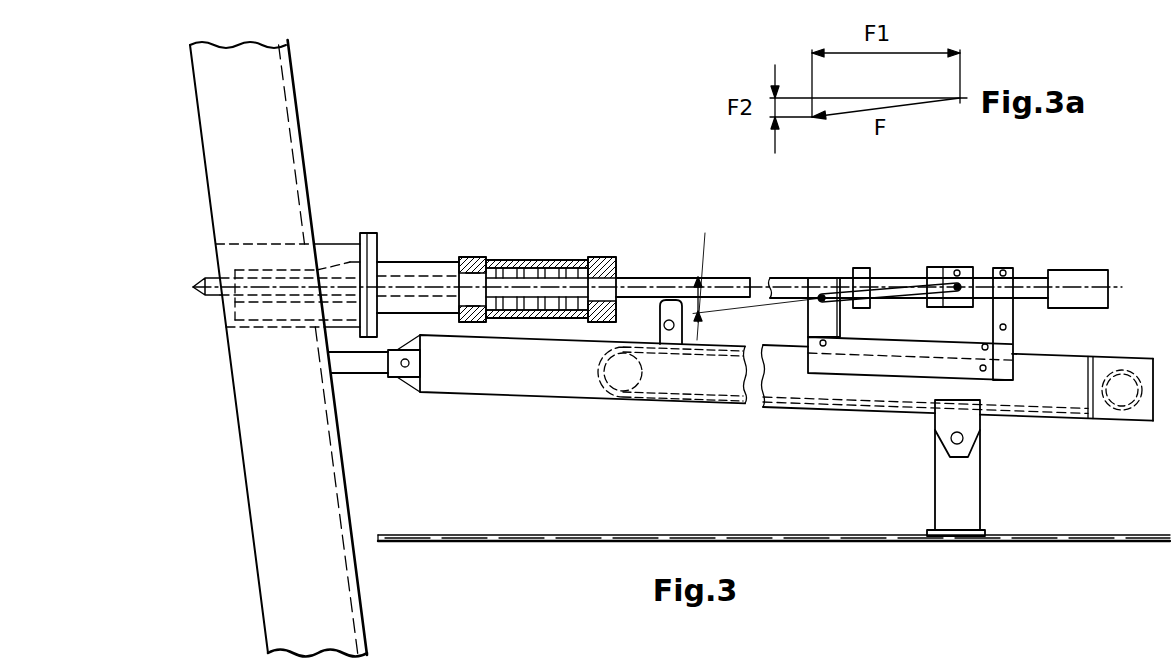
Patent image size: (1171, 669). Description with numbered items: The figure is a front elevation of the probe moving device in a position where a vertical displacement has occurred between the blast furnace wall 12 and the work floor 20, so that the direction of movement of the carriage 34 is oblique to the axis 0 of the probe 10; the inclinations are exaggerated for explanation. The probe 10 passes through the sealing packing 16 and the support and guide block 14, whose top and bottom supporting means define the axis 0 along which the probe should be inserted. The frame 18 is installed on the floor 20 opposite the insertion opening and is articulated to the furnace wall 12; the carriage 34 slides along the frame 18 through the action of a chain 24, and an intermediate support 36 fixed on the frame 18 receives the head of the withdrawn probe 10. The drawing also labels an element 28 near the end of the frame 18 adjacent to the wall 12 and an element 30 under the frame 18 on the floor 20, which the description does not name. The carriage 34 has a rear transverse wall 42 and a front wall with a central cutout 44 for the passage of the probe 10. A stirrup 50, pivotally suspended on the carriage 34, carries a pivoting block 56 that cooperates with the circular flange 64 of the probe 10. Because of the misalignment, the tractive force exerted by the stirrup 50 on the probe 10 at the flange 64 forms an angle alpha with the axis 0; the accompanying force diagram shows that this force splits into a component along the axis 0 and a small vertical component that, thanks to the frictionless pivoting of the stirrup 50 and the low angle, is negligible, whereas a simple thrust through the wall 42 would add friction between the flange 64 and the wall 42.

The axis 0 is at (398, 286).
The probe 10 is at (723, 277).
The blast furnace wall 12 is at (307, 190).
The support and guide block 14 is at (319, 244).
The sealing packing 16 is at (512, 258).
The frame 18 is at (492, 388).
The work floor 20 is at (592, 535).
The chain 24 is at (660, 393).
The pivot joint 28 is at (401, 374).
The support leg 30 is at (940, 483).
The carriage 34 is at (1032, 252).
The intermediate support 36 is at (649, 300).
The rear transverse wall 42 is at (1013, 323).
The central cutout 44 is at (815, 278).
The stirrup 50 is at (899, 264).
The block 56 is at (975, 268).
The circular flange 64 is at (932, 267).